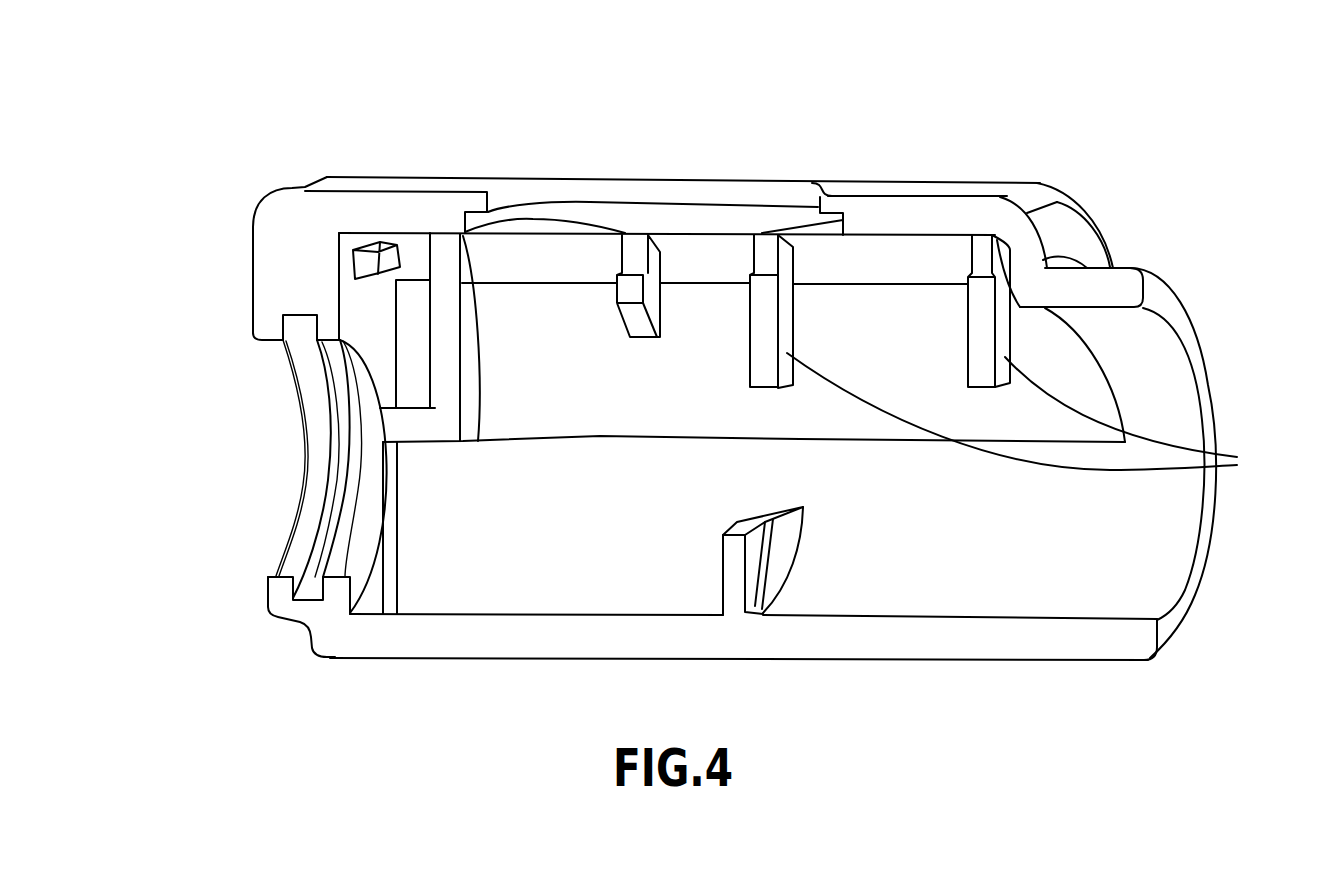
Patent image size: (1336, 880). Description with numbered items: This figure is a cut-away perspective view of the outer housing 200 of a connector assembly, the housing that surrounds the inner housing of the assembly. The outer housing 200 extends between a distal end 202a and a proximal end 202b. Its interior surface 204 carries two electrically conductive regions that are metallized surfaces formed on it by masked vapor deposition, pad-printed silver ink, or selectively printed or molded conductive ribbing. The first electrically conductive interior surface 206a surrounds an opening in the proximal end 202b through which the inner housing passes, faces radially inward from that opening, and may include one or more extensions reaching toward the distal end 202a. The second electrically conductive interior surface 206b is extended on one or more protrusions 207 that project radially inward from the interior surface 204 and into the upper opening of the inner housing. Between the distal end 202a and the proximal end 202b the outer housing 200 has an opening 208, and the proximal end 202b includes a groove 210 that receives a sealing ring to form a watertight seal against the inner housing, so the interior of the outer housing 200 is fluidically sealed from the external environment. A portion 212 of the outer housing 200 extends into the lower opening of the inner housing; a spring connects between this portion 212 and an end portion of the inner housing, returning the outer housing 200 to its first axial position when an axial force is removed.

The outer housing 200 is at (1213, 80).
The distal end 202a is at (1165, 290).
The proximal end 202b is at (265, 210).
The interior surface 204 is at (487, 585).
The first electrically conductive interior surface 206a is at (371, 492).
The second electrically conductive interior surface 206b is at (980, 320).
The protrusion 207 is at (1038, 414).
The opening 208 is at (588, 191).
The groove 210 is at (331, 424).
The portion of the outer housing 212 is at (752, 578).